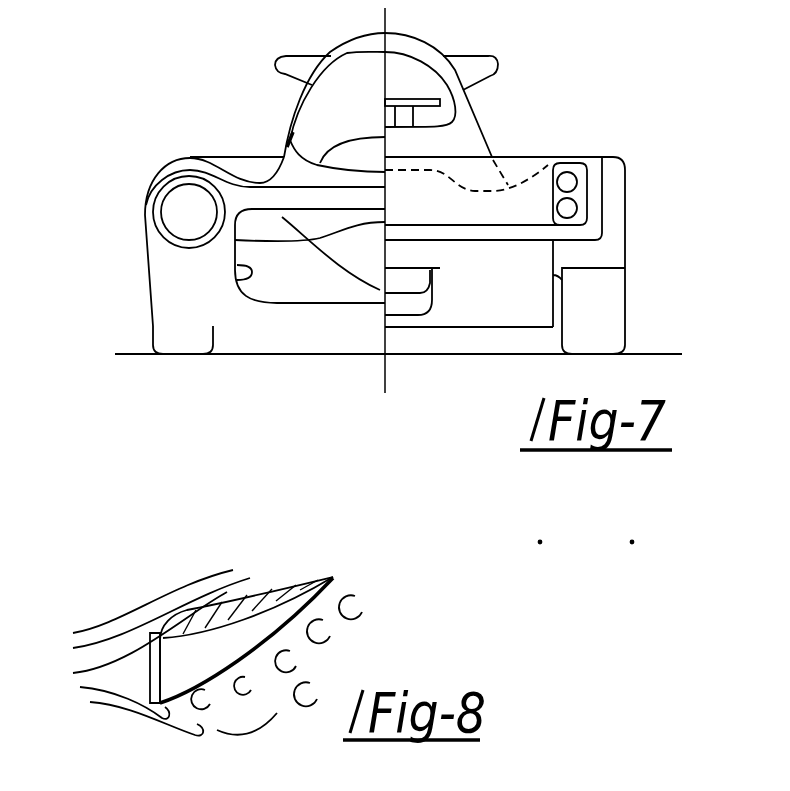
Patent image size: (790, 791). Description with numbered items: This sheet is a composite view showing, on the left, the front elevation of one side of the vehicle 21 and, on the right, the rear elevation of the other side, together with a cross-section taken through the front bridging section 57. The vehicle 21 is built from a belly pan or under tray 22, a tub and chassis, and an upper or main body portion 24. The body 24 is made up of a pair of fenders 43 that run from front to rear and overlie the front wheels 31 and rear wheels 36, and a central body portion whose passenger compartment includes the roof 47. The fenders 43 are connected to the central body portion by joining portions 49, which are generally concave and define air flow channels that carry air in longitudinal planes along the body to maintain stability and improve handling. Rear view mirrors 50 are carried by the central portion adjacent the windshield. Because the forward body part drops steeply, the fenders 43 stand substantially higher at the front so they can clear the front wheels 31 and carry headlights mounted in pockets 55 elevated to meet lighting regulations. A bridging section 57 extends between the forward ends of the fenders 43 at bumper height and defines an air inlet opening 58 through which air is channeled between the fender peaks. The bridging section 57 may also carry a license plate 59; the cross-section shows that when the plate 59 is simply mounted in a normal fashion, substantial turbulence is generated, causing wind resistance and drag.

In FIG. 7, the vehicle 21 is at (532, 78).
In FIG. 7, the belly pan or under tray 22 is at (293, 327).
In FIG. 7, the upper or main body portion 24 is at (194, 148).
In FIG. 7, the front wheels 31 is at (173, 340).
In FIG. 7, the rear wheels 36 is at (610, 307).
In FIG. 7, the fenders 43 is at (173, 153).
In FIG. 7, the roof 47 is at (430, 32).
In FIG. 7, the joining portions 49 is at (257, 173).
In FIG. 7, the rear view mirrors 50 is at (512, 37).
In FIG. 7, the headlight pockets 55 is at (157, 177).
In FIG. 7, the bridging section 57 is at (297, 197).
In FIG. 8, the bridging section 57 is at (273, 587).
In FIG. 7, the air inlet opening 58 is at (237, 277).
In FIG. 8, the license plate 59 is at (150, 673).